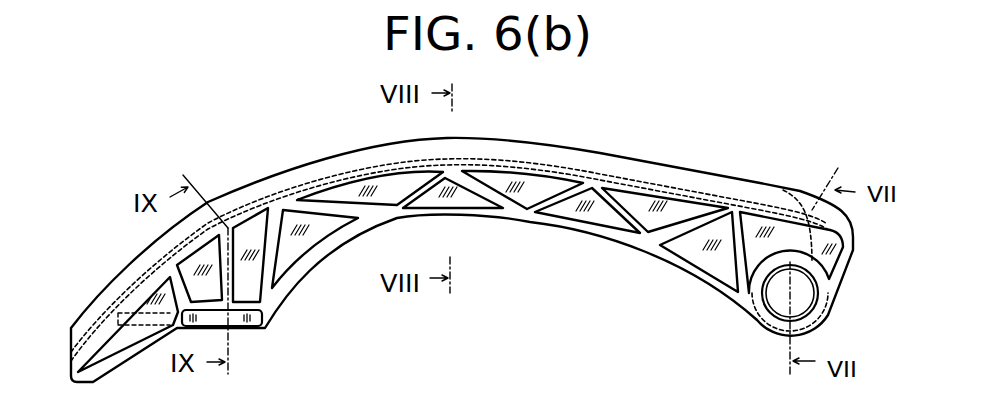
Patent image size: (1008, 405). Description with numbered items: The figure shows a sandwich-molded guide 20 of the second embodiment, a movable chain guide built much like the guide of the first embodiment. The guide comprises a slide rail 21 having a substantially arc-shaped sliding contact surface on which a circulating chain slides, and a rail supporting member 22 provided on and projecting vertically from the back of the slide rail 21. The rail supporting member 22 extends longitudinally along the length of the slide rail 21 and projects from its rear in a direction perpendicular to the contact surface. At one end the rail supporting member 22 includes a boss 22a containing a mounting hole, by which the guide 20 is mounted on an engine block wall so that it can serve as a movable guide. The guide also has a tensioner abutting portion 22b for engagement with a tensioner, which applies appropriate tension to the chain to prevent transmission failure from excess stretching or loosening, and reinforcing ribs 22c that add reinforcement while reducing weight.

The sandwich-molded guide 20 is at (682, 146).
The slide rail 21 is at (504, 140).
The rail supporting member 22 is at (647, 236).
The boss 22a is at (829, 317).
The tensioner abutting portion 22b is at (237, 327).
The reinforcing ribs 22c is at (398, 205).